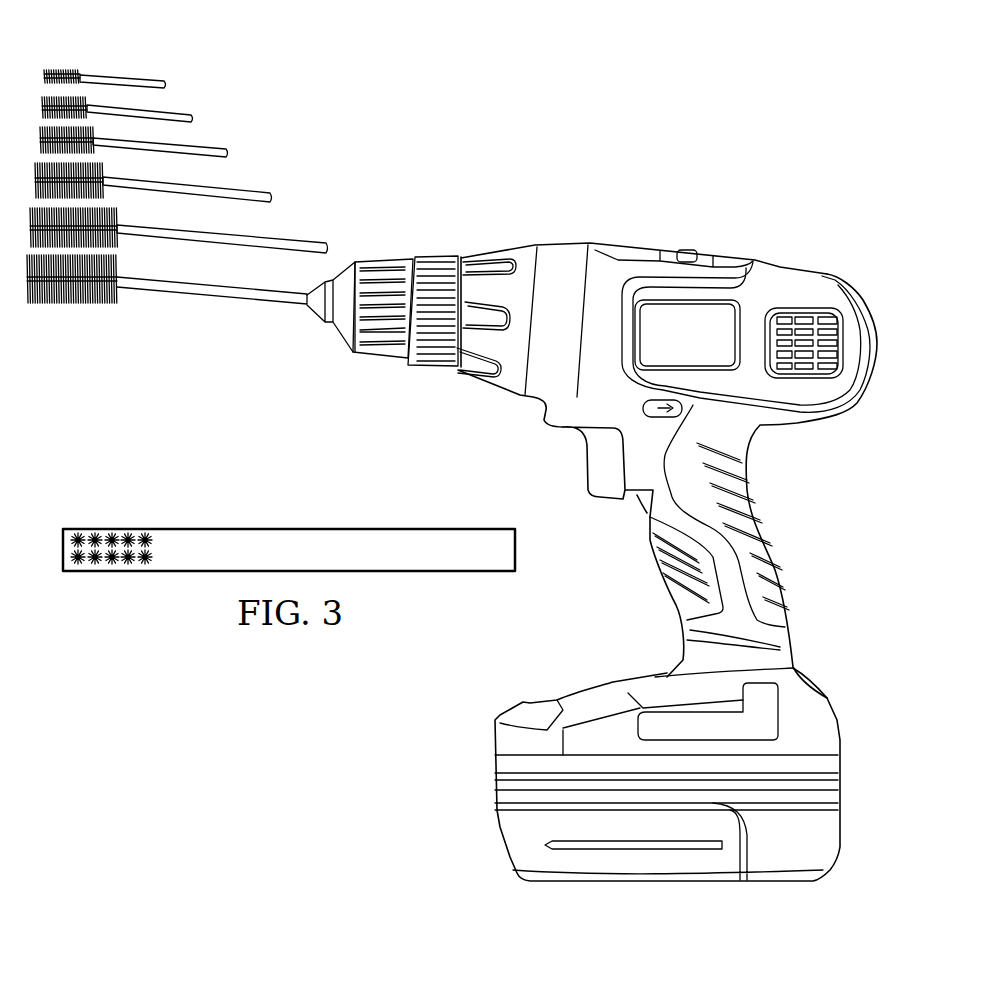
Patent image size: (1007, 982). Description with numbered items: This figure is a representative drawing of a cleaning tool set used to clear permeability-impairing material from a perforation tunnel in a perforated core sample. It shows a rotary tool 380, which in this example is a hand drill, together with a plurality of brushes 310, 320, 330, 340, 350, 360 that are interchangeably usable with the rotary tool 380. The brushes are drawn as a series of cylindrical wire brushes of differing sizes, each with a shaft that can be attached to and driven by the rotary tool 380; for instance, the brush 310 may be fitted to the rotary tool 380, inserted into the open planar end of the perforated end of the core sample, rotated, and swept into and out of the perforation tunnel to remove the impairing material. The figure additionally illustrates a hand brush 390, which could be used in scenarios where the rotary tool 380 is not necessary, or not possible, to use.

The brush 310 is at (212, 297).
The brush 320 is at (293, 242).
The brush 330 is at (247, 192).
The brush 340 is at (213, 148).
The brush 350 is at (177, 117).
The brush 360 is at (120, 77).
The rotary tool 380 is at (565, 247).
The hand brush 390 is at (288, 528).